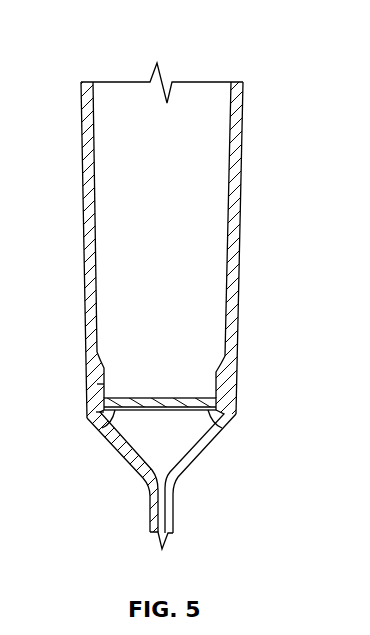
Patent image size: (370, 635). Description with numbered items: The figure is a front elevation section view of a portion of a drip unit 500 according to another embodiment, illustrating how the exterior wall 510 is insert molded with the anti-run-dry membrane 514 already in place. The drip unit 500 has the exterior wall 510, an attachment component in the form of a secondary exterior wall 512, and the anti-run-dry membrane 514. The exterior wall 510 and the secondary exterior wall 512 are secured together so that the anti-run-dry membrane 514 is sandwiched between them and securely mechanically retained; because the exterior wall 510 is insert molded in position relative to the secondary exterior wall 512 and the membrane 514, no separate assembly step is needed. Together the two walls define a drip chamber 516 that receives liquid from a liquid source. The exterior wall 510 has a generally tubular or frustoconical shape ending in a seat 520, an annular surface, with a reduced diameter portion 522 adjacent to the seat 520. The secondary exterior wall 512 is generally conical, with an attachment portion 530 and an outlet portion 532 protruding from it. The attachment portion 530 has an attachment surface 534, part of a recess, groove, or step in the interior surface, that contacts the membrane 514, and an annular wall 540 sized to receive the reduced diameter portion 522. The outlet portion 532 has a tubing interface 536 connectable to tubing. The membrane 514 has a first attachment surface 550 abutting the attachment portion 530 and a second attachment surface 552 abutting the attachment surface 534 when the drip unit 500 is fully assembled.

The drip unit 500 is at (251, 47).
The exterior wall 510 is at (258, 242).
The secondary exterior wall 512 is at (178, 481).
The anti-run-dry membrane 514 is at (153, 420).
The drip chamber 516 is at (184, 211).
The seat 520 is at (224, 405).
The reduced diameter portion 522 is at (100, 384).
The attachment portion 530 is at (95, 452).
The outlet portion 532 is at (136, 522).
The attachment surface 534 is at (96, 414).
The tubing interface 536 is at (182, 490).
The annular wall 540 is at (229, 385).
The first attachment surface 550 is at (99, 383).
The second attachment surface 552 is at (110, 445).